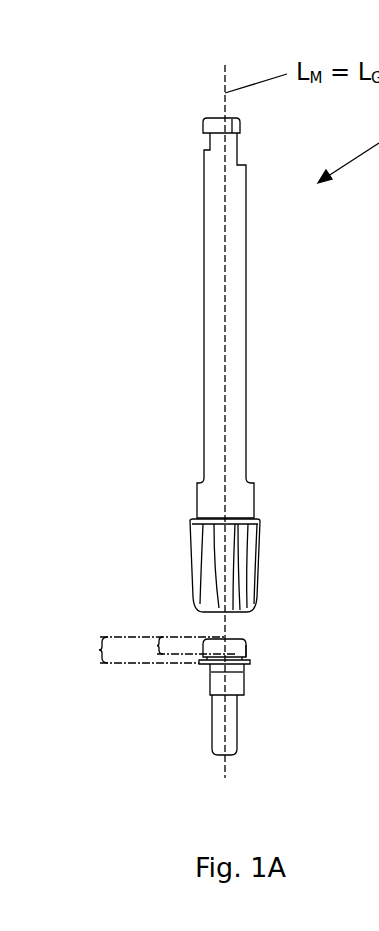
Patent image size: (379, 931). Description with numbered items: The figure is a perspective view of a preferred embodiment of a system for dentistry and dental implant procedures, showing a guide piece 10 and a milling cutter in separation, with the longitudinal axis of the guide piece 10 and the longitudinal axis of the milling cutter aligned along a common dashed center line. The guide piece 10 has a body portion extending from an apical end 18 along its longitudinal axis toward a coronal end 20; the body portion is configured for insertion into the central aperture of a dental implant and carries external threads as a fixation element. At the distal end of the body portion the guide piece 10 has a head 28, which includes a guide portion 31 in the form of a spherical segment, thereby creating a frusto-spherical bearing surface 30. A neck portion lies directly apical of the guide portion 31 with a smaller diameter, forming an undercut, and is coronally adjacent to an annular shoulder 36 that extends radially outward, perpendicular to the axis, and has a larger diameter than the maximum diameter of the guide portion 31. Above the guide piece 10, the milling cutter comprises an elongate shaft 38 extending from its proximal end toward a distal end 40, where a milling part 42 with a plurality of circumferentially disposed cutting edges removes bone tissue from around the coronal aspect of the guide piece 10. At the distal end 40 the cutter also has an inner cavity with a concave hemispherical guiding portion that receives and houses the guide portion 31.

The guide piece 10 is at (288, 675).
The apical end 18 is at (237, 747).
The coronal end 20 is at (223, 640).
The head 28 is at (141, 651).
The frusto-spherical bearing surface 30 is at (247, 653).
The guide portion 31 is at (178, 651).
The annular shoulder 36 is at (208, 661).
The elongate shaft 38 is at (235, 318).
The distal end 40 is at (222, 606).
The milling part 42 is at (262, 552).